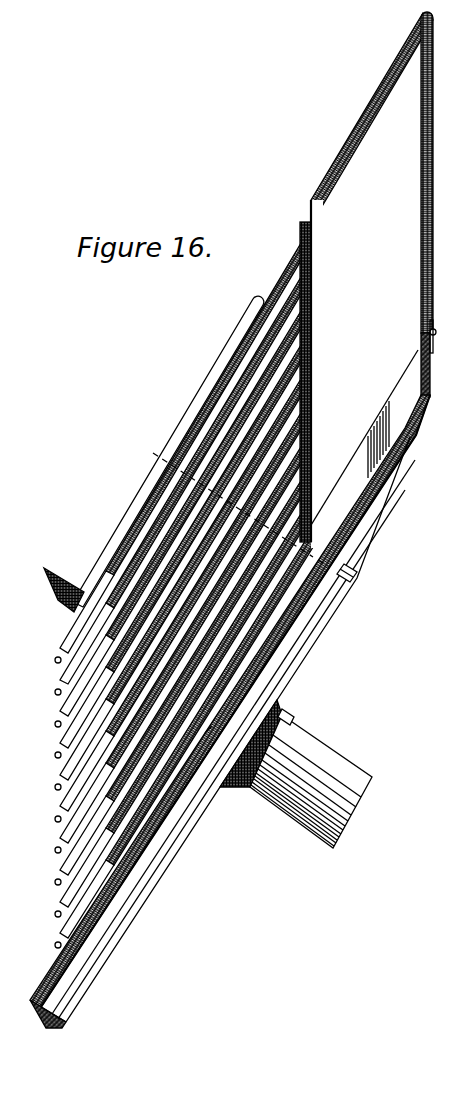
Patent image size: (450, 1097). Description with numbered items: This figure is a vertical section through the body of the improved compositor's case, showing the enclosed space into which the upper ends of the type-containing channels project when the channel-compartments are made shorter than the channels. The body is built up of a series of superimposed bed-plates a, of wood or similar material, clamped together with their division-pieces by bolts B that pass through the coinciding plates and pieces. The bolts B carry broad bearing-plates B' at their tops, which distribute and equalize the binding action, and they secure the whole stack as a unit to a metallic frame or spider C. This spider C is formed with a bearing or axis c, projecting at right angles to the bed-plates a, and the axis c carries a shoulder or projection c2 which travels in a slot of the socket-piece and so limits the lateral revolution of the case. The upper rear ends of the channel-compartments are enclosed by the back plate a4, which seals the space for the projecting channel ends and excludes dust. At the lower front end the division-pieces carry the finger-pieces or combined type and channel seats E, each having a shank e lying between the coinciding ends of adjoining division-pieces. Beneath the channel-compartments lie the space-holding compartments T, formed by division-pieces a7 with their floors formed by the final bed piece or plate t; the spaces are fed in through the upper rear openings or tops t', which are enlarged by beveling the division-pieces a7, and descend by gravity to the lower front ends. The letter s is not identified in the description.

The back plate a4 is at (369, 280).
The upper rear openings or tops t' is at (388, 435).
The final bed piece or plate t is at (233, 737).
The bolt B is at (362, 575).
The metallic frame or spider C is at (318, 641).
The space-holding compartment T is at (230, 711).
The shoulder or projection c2 is at (295, 718).
The bearing or axis c is at (296, 774).
The division-piece a7 is at (201, 737).
The broad bearing-plate B' is at (168, 451).
The finger-piece or combined type and channel seat E is at (61, 658).
The rod s is at (185, 481).
The shank e is at (185, 514).
The bed-plate a is at (185, 546).